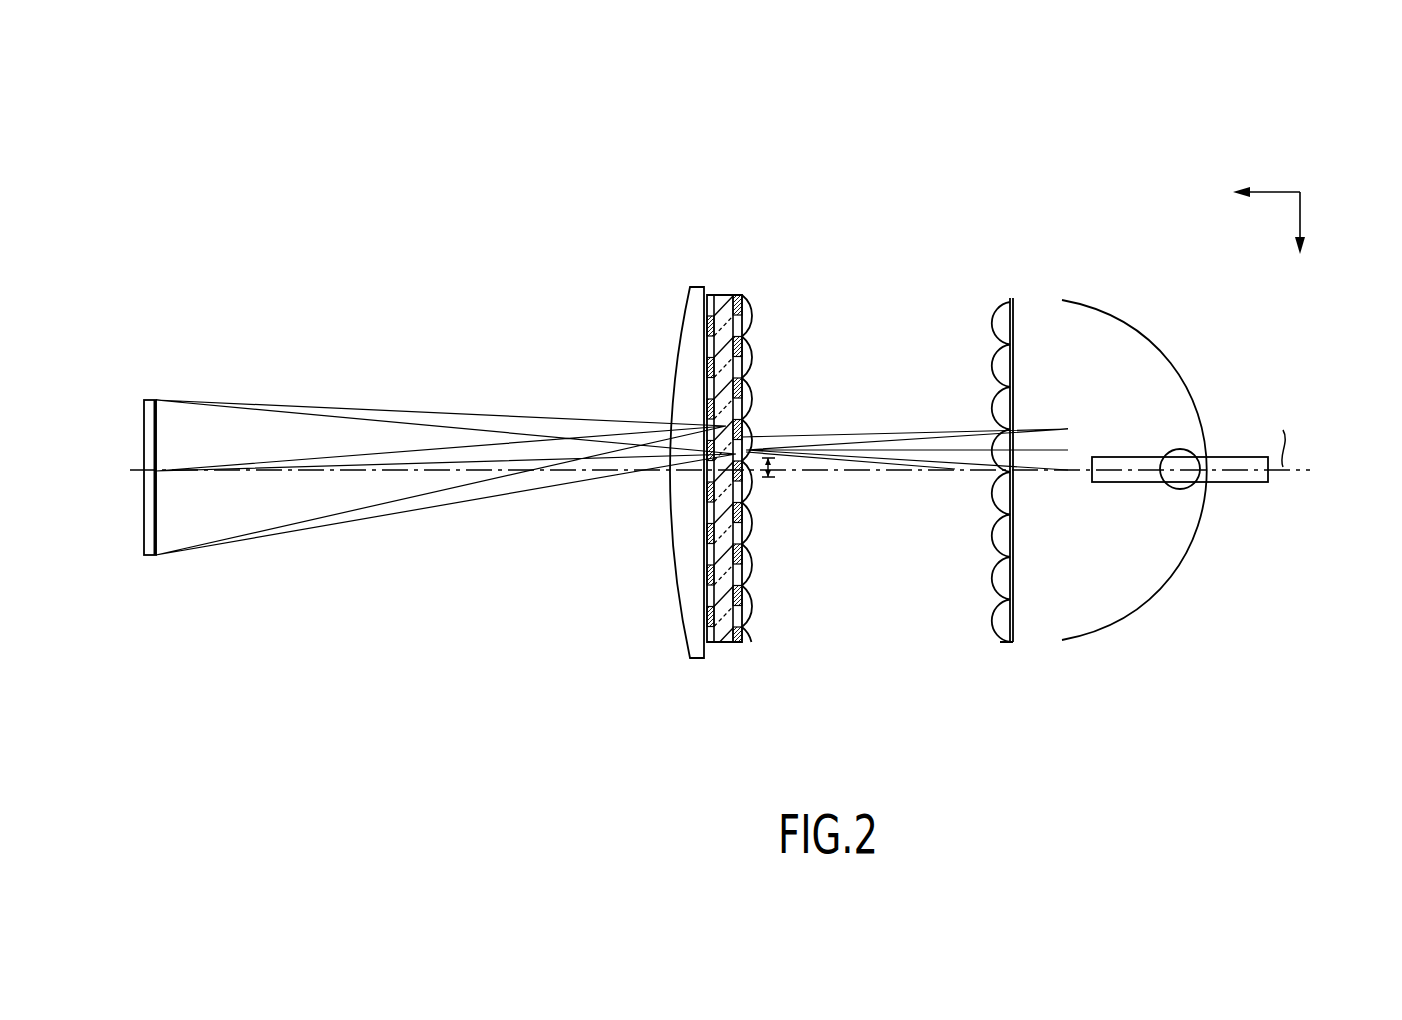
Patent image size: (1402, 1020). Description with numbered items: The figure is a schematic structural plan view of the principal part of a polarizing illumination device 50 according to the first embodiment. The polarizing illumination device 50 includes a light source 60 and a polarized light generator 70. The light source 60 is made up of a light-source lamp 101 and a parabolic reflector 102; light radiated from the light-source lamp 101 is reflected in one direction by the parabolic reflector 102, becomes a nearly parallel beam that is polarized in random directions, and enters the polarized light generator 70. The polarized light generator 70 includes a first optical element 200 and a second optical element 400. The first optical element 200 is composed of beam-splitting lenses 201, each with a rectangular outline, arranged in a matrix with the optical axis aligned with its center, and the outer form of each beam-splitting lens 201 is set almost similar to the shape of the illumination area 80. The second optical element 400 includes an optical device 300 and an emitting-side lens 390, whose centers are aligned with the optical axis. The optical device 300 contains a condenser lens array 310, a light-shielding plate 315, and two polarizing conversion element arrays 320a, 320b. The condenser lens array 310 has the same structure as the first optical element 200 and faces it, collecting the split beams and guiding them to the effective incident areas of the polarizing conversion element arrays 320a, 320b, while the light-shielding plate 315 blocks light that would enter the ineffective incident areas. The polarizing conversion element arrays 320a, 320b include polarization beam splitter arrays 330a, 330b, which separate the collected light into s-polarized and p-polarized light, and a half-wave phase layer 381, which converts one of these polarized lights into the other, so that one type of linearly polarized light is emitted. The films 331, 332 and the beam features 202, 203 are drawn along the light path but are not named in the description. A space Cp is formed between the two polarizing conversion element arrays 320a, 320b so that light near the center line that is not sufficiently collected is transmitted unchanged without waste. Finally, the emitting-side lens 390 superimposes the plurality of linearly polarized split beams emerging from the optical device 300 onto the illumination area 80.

The polarizing illumination device 50 is at (750, 435).
The light source 60 is at (1245, 694).
The polarized light generator 70 is at (1025, 694).
The illumination area 80 is at (151, 556).
The light-source lamp 101 is at (1185, 462).
The parabolic reflector 102 is at (1112, 328).
The first optical element 200 is at (1010, 300).
The beam-splitting lens 201 is at (993, 332).
The light beam 202 is at (900, 440).
The condensed light image 203 is at (752, 447).
The optical device 300 is at (895, 198).
The condenser lens array 310 is at (748, 300).
The light-shielding plate 315 is at (738, 296).
The polarizing conversion element array 320a is at (780, 673).
The polarizing conversion element array 320b is at (775, 238).
The polarization beam splitter array 330a is at (728, 642).
The polarization beam splitter array 330b is at (735, 295).
The polarization separating film 331 is at (735, 578).
The reflecting film 332 is at (732, 608).
The λ/2 phase layer 381 is at (700, 292).
The emitting-side lens 390 is at (679, 332).
The second optical element 400 is at (753, 147).
The space Cp is at (770, 468).